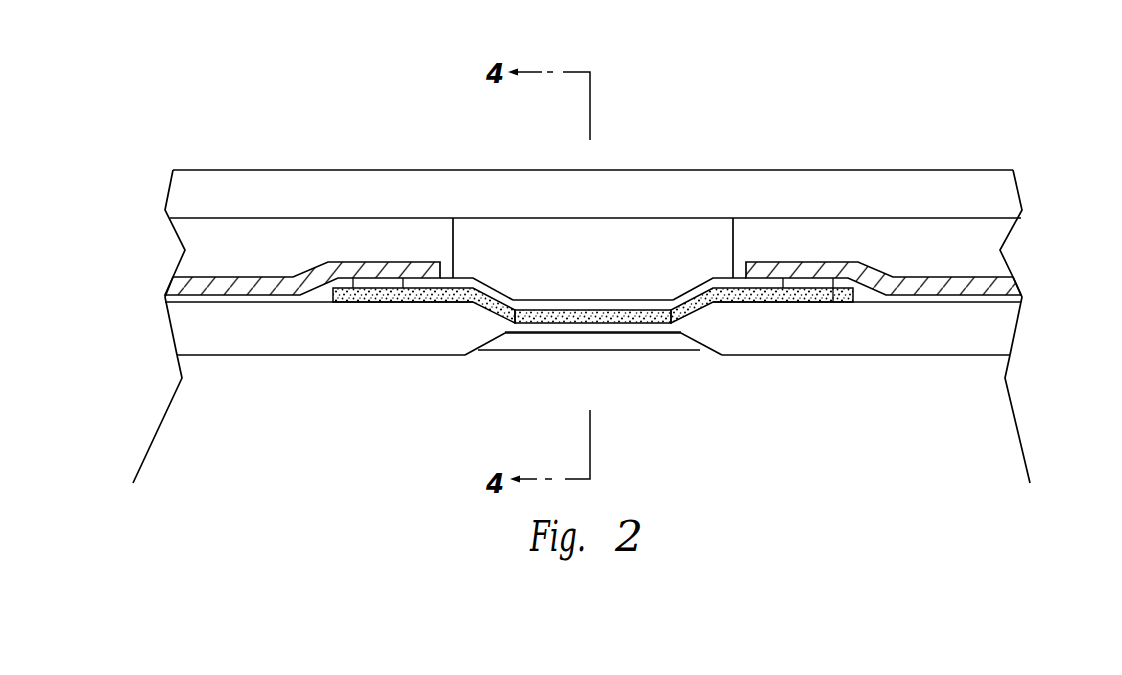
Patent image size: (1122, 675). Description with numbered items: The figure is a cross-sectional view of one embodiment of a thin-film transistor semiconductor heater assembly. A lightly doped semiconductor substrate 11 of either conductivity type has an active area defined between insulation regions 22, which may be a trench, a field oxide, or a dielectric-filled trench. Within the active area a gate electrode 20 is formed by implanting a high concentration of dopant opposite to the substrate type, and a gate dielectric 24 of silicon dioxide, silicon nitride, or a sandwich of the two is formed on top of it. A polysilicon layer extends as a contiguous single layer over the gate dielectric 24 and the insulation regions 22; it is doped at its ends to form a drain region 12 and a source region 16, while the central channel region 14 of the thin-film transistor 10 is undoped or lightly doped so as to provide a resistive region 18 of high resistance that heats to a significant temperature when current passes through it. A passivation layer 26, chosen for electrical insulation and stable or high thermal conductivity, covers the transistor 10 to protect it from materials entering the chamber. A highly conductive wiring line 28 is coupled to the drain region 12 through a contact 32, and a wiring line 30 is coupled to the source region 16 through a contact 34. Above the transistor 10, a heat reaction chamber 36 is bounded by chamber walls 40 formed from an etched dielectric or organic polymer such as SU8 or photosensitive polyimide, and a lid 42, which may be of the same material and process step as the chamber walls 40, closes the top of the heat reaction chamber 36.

The thin-film transistor 10 is at (720, 403).
The semiconductor substrate 11 is at (965, 447).
The drain region 12 is at (833, 290).
The channel region 14 is at (652, 303).
The source region 16 is at (367, 302).
The resistive region 18 is at (528, 316).
The gate electrode 20 is at (655, 338).
The insulation regions 22 is at (245, 328).
The gate dielectric 24 is at (562, 328).
The passivation layer 26 is at (537, 305).
The wiring line 28 is at (980, 287).
The wiring line 30 is at (192, 287).
The contact 32 is at (825, 285).
The contact 34 is at (380, 285).
The heat reaction chamber 36 is at (640, 258).
The chamber walls 40 is at (208, 235).
The lid 42 is at (678, 188).